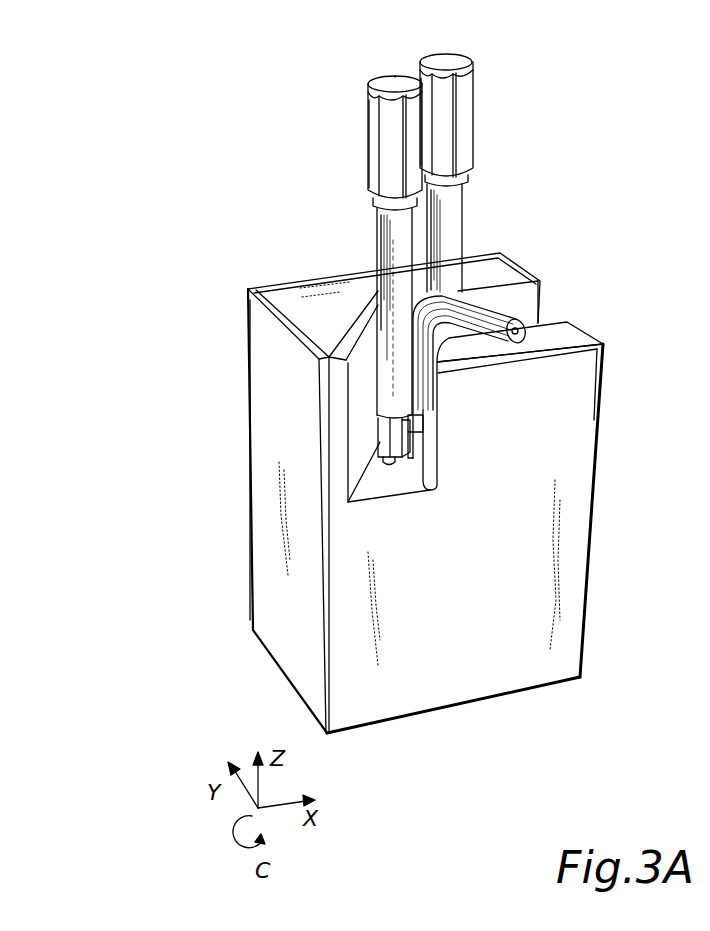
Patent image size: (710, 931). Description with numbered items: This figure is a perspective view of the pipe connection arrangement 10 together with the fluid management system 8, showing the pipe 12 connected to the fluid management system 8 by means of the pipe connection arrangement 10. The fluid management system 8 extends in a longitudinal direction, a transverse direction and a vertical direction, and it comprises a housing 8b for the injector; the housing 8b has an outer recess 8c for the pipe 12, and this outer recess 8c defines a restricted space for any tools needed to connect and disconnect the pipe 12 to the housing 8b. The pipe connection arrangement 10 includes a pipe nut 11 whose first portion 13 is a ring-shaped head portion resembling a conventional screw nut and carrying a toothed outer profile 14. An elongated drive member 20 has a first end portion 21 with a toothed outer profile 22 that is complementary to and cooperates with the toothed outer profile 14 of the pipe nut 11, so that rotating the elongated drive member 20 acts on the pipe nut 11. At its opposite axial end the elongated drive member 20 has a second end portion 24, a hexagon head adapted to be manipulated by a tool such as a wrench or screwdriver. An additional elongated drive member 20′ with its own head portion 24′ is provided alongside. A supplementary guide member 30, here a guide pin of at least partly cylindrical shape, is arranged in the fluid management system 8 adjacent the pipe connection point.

The pipe connection arrangement 10 is at (350, 154).
The fluid management system 8 is at (258, 342).
The housing 8b is at (265, 363).
The outer recess 8c is at (546, 309).
The pipe nut 11 is at (420, 462).
The first portion 13 is at (418, 455).
The toothed outer profile 14 is at (418, 455).
The pipe 12 is at (500, 307).
The elongated drive member 20 is at (388, 105).
The additional elongated drive member 20′ is at (462, 88).
The second end portion 24 is at (388, 130).
The second end portion of additional elongated drive member 24′ is at (458, 118).
The first end portion 21 is at (388, 445).
The toothed outer profile 22 is at (388, 445).
The supplementary guide member 30 is at (396, 460).